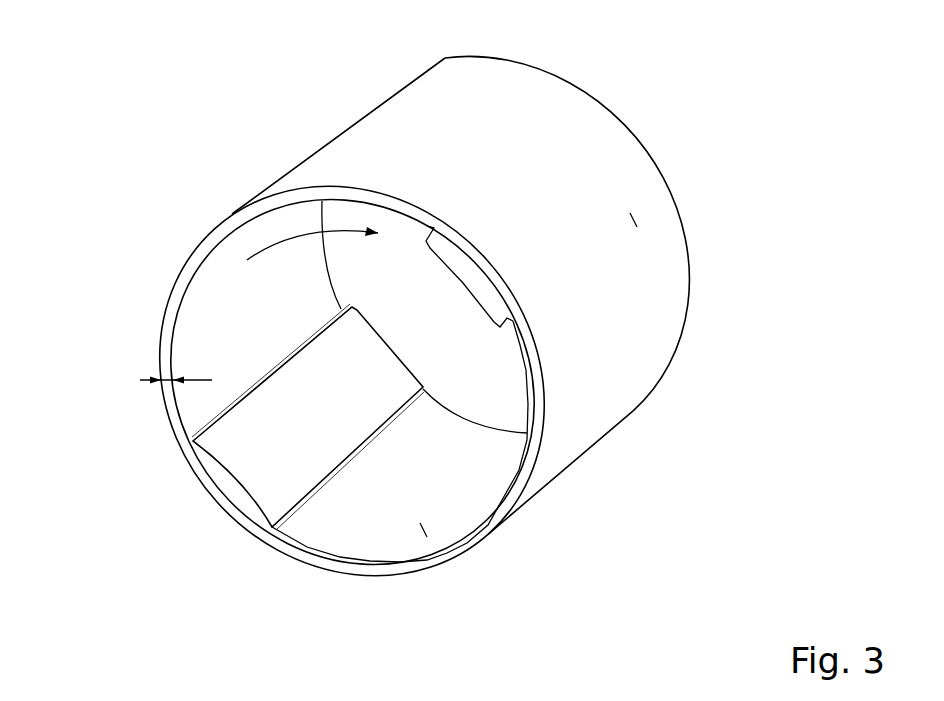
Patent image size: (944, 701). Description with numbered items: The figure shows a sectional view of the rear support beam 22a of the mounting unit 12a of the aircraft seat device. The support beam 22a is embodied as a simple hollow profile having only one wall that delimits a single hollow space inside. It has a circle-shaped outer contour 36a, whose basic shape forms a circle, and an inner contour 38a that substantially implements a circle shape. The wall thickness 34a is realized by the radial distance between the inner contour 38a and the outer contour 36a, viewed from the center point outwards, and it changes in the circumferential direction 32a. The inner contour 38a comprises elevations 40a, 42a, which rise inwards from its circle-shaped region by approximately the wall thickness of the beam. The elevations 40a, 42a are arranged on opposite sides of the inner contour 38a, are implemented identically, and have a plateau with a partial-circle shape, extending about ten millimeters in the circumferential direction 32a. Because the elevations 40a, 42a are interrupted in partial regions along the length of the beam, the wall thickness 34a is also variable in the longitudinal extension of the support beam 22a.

The mounting unit 12a is at (133, 225).
The rear support beam 22a is at (580, 157).
The circumferential direction 32a is at (337, 231).
The wall thickness 34a is at (164, 380).
The outer contour 36a is at (637, 227).
The inner contour 38a is at (427, 537).
The elevation 40a is at (293, 448).
The elevation 42a is at (483, 300).